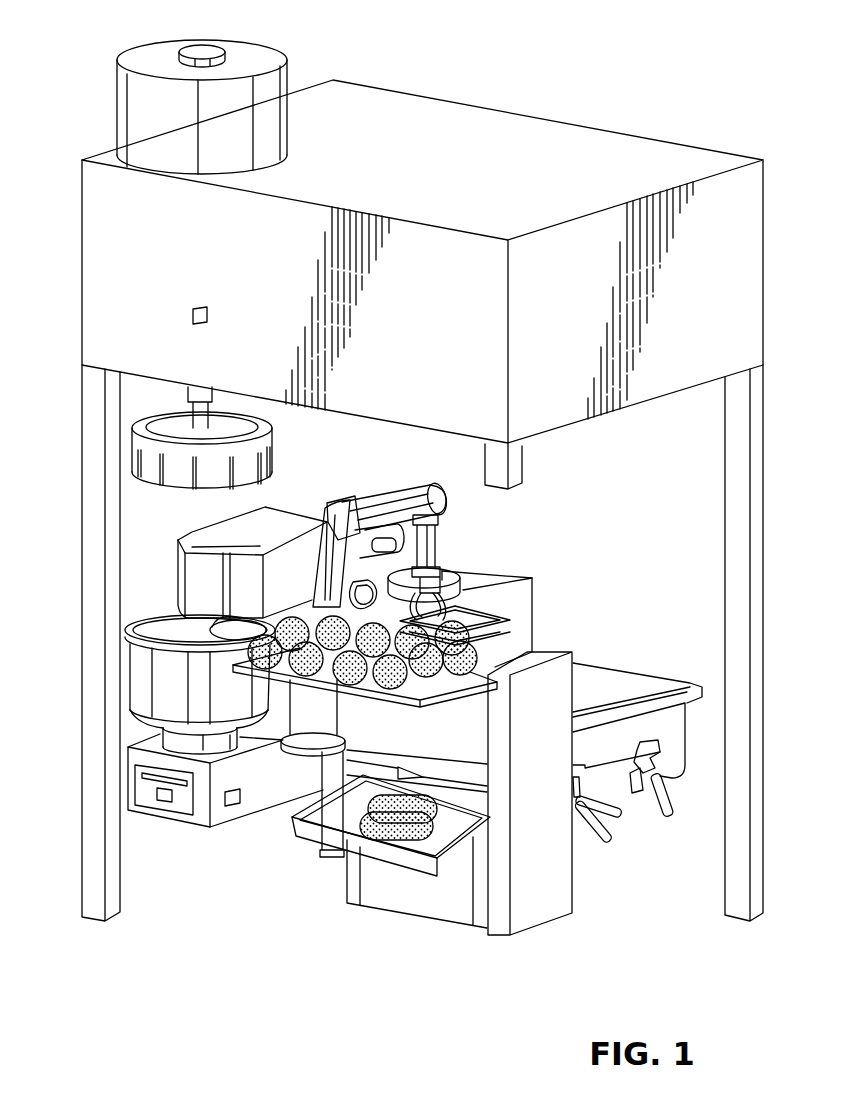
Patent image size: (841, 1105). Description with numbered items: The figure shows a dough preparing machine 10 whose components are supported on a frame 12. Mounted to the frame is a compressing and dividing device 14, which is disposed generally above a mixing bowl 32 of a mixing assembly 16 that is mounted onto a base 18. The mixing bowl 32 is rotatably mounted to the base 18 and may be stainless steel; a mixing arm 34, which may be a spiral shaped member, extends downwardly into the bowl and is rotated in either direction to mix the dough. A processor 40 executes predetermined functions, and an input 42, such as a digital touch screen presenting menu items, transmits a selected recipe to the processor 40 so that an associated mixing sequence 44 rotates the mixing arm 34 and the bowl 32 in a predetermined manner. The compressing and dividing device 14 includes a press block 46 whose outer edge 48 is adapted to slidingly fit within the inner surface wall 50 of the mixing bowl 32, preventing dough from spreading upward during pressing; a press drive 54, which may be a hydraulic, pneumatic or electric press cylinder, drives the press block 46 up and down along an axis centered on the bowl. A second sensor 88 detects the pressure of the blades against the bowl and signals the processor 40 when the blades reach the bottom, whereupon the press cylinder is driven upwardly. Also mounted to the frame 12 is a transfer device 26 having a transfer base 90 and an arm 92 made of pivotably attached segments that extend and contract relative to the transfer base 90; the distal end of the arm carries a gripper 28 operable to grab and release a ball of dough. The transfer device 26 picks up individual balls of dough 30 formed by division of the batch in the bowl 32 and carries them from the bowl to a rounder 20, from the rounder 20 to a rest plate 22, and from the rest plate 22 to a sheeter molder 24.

The dough preparing machine 10 is at (737, 117).
The frame 12 is at (773, 500).
The compressing and dividing device 14 is at (152, 494).
The mixing assembly 16 is at (301, 507).
The base 18 is at (173, 833).
The rounder 20 is at (504, 573).
The rest plate 22 is at (353, 703).
The sheeter molder 24 is at (613, 665).
The transfer device 26 is at (393, 476).
The gripper 28 is at (438, 582).
The balls of dough 30 is at (468, 679).
The mixing bowl 32 is at (200, 684).
The mixing arm 34 is at (190, 624).
The processor 40 is at (157, 797).
The input 42 is at (137, 781).
The mixing sequence 44 is at (236, 804).
The press block 46 is at (130, 436).
The outer edge 48 is at (212, 488).
The inner surface wall 50 is at (153, 622).
The press drive 54 is at (202, 107).
The second sensor 88 is at (207, 308).
The transfer base 90 is at (318, 735).
The arm 92 is at (312, 559).